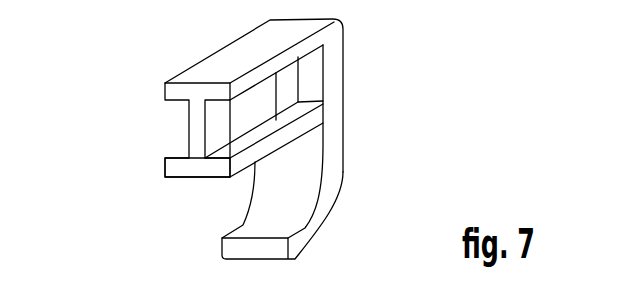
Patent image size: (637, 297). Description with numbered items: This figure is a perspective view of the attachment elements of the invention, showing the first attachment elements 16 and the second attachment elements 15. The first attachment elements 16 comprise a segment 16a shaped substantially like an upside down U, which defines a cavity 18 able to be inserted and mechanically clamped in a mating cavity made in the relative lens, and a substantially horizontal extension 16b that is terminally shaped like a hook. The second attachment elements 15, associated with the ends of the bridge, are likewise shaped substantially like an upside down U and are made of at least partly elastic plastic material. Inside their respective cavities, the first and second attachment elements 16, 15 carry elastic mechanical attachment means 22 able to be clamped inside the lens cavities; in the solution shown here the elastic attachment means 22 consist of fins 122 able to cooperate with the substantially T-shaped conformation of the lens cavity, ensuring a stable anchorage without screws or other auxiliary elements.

The second attachment elements 15 is at (199, 49).
The first attachment elements 16 is at (197, 98).
The fins 122 is at (258, 90).
The elastic mechanical attachment means 22 is at (279, 89).
The segment 16a is at (176, 170).
The cavity 18 is at (223, 156).
The extension 16b is at (327, 199).